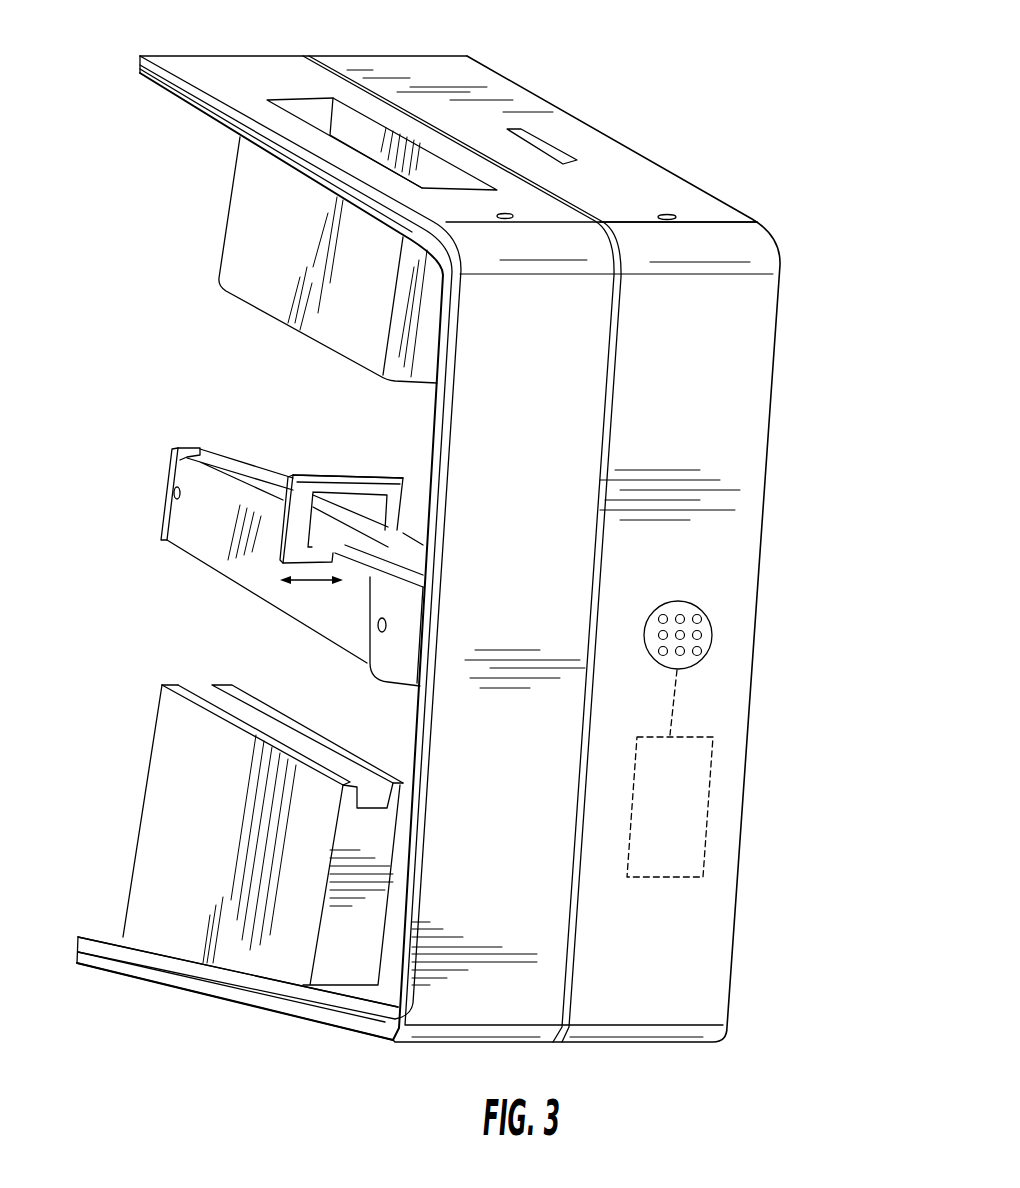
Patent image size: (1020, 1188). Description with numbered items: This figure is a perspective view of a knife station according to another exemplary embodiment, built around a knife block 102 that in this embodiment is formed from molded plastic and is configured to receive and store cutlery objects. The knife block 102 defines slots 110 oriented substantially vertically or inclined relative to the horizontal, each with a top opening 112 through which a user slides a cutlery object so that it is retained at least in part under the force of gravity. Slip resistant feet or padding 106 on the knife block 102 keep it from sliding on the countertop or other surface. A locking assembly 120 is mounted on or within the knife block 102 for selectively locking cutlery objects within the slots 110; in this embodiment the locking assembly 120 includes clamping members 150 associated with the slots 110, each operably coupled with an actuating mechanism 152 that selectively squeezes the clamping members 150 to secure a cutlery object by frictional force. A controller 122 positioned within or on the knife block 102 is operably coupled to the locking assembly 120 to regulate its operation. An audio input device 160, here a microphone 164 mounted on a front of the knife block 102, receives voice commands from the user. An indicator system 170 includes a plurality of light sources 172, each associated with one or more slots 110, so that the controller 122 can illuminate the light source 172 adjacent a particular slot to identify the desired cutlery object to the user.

The knife block 102 is at (812, 230).
The slip resistant feet or padding 106 is at (152, 980).
The slots 110 is at (260, 478).
The top opening 112 is at (392, 125).
The locking assembly 120 is at (332, 456).
The controller 122 is at (707, 813).
The clamping member 150 is at (320, 543).
The actuating mechanism 152 is at (383, 474).
The audio input device 160 is at (700, 582).
The microphone 164 is at (712, 648).
The indicator system 170 is at (676, 233).
The light source 172 is at (498, 218).